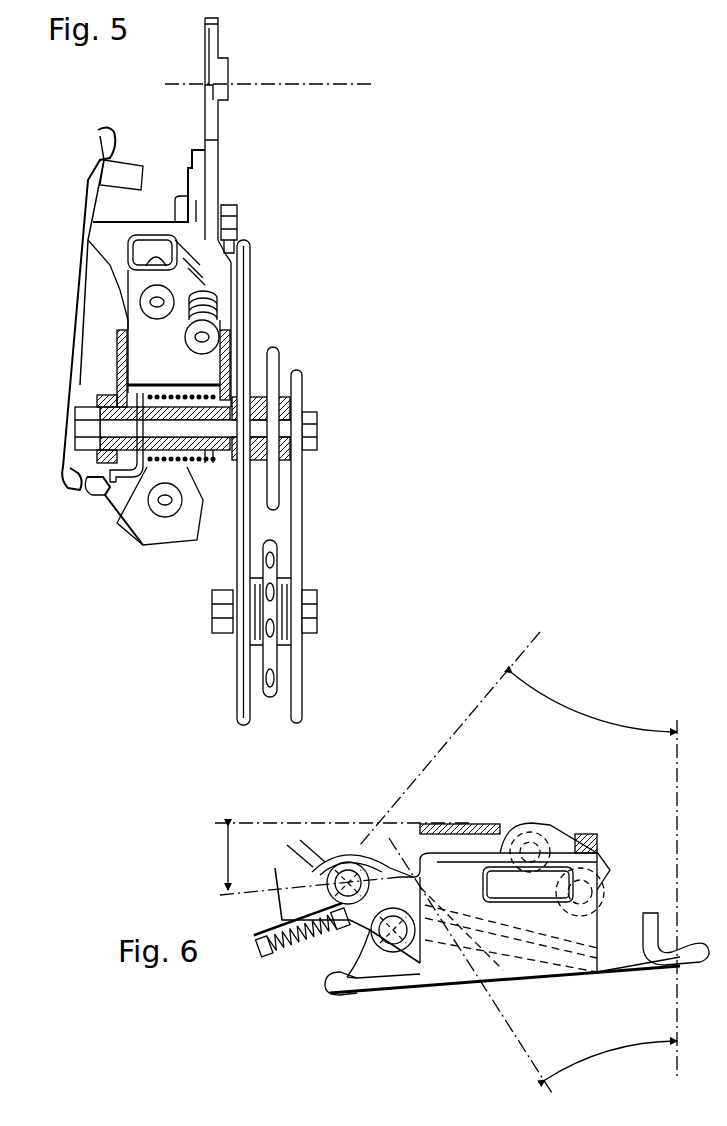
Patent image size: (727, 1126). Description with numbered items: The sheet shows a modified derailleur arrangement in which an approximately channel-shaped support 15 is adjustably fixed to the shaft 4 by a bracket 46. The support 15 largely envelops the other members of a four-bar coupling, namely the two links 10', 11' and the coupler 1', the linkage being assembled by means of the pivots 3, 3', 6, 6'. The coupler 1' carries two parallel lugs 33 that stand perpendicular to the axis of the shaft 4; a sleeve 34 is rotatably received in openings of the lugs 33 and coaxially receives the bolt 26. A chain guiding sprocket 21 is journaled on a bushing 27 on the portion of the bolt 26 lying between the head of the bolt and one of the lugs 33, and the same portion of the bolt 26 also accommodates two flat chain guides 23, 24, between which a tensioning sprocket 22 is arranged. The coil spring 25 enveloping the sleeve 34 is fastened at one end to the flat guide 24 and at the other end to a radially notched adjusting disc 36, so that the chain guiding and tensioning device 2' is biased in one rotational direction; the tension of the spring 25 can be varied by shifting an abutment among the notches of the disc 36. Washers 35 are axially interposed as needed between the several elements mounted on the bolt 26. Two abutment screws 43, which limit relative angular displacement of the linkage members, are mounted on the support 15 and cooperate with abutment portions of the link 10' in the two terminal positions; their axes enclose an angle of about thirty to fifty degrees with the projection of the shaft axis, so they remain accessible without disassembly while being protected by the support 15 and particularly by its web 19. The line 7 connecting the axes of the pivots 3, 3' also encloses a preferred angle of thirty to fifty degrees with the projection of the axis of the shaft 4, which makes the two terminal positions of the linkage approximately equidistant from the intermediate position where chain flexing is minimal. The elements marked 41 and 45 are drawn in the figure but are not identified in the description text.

In FIG. 5, the shaft 4 is at (294, 84).
In FIG. 6, the shaft 4 is at (679, 786).
In FIG. 5, the bracket 46 is at (212, 121).
In FIG. 5, the coupler 1' is at (187, 278).
In FIG. 6, the coupler 1' is at (617, 884).
In FIG. 5, the link 11' is at (111, 314).
In FIG. 6, the link 11' is at (570, 882).
In FIG. 5, the support 15 is at (60, 358).
In FIG. 6, the support 15 is at (537, 983).
In FIG. 5, the web 19 is at (80, 296).
In FIG. 6, the web 19 is at (422, 983).
In FIG. 5, the pivot 6' is at (131, 305).
In FIG. 6, the pivot 6' is at (580, 851).
In FIG. 5, the pivot 6 is at (238, 317).
In FIG. 6, the pivot 6 is at (530, 823).
In FIG. 5, the lugs 33 is at (127, 372).
In FIG. 6, the lugs 33 is at (452, 828).
In FIG. 5, the bolt 26 is at (290, 426).
In FIG. 5, the chain guiding sprocket 21 is at (281, 358).
In FIG. 5, the bushing 27 is at (310, 441).
In FIG. 5, the washers 35 is at (88, 408).
In FIG. 5, the adjusting disc 36 is at (85, 468).
In FIG. 5, the sleeve 34 is at (205, 464).
In FIG. 5, the pivot 3 is at (160, 514).
In FIG. 6, the pivot 3 is at (330, 854).
In FIG. 5, the coil spring 25 is at (147, 473).
In FIG. 5, the flat chain guide 24 is at (240, 678).
In FIG. 5, the flat chain guide 23 is at (300, 387).
In FIG. 5, the chain guiding and tensioning device 2' is at (328, 493).
In FIG. 5, the tensioning sprocket 22 is at (275, 562).
In FIG. 6, the line 7 is at (495, 1033).
In FIG. 6, the lug 41 is at (500, 842).
In FIG. 6, the stop pin 45 is at (326, 843).
In FIG. 6, the link 10' is at (383, 817).
In FIG. 6, the pivot 3' is at (381, 971).
In FIG. 6, the abutment screws 43 is at (322, 964).